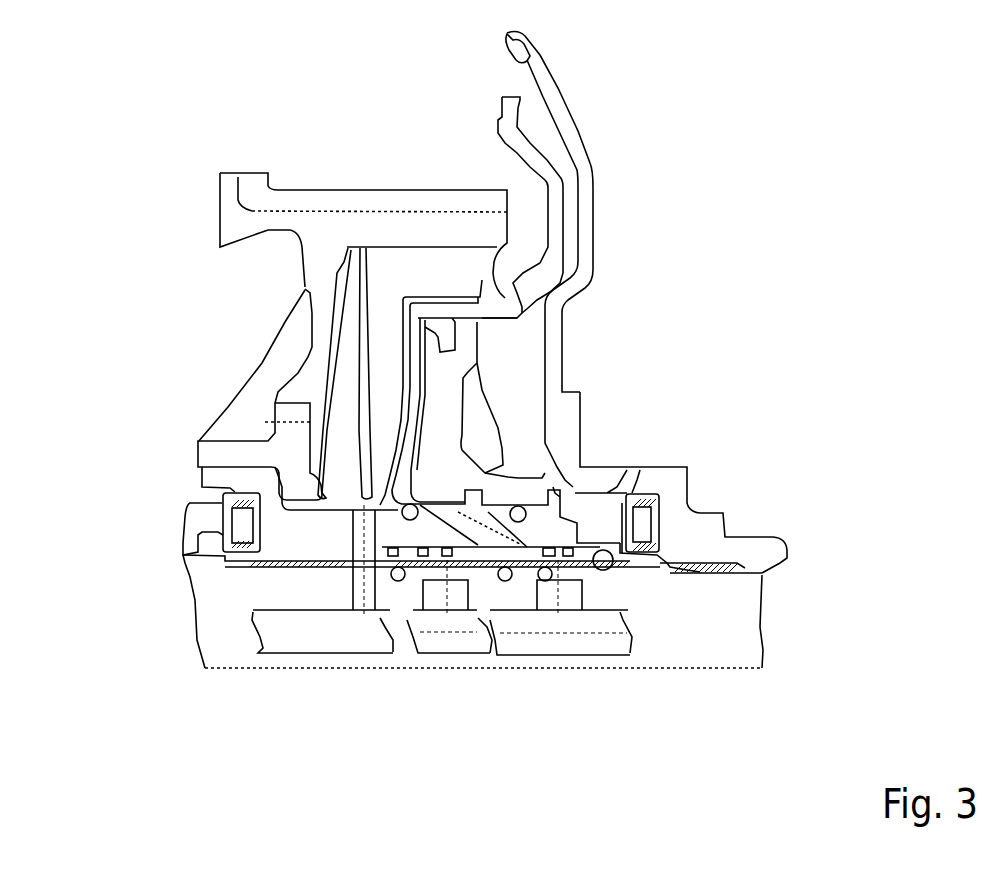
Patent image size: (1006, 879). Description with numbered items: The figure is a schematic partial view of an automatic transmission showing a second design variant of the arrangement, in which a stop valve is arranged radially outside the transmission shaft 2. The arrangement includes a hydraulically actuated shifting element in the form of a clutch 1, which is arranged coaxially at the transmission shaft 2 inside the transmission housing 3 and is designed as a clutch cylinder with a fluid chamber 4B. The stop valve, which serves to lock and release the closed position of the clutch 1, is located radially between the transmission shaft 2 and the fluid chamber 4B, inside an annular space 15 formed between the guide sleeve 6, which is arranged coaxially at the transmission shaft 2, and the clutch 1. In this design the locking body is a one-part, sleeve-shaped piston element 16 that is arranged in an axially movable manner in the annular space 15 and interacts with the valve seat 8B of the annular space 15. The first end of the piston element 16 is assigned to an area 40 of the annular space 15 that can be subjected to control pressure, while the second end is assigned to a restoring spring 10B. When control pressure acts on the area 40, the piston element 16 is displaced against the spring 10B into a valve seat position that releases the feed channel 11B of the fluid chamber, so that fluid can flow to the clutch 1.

The clutch 1 is at (385, 358).
The transmission shaft 2 is at (712, 627).
The transmission housing 3 is at (577, 157).
The fluid chamber 4B is at (475, 478).
The guide sleeve 6 is at (600, 567).
The valve seat 8B is at (470, 560).
The spring 10B is at (380, 578).
The feed channel 11B is at (438, 612).
The annular space 15 is at (548, 508).
The piston element 16 is at (658, 504).
The area subjected to control pressure 40 is at (553, 562).